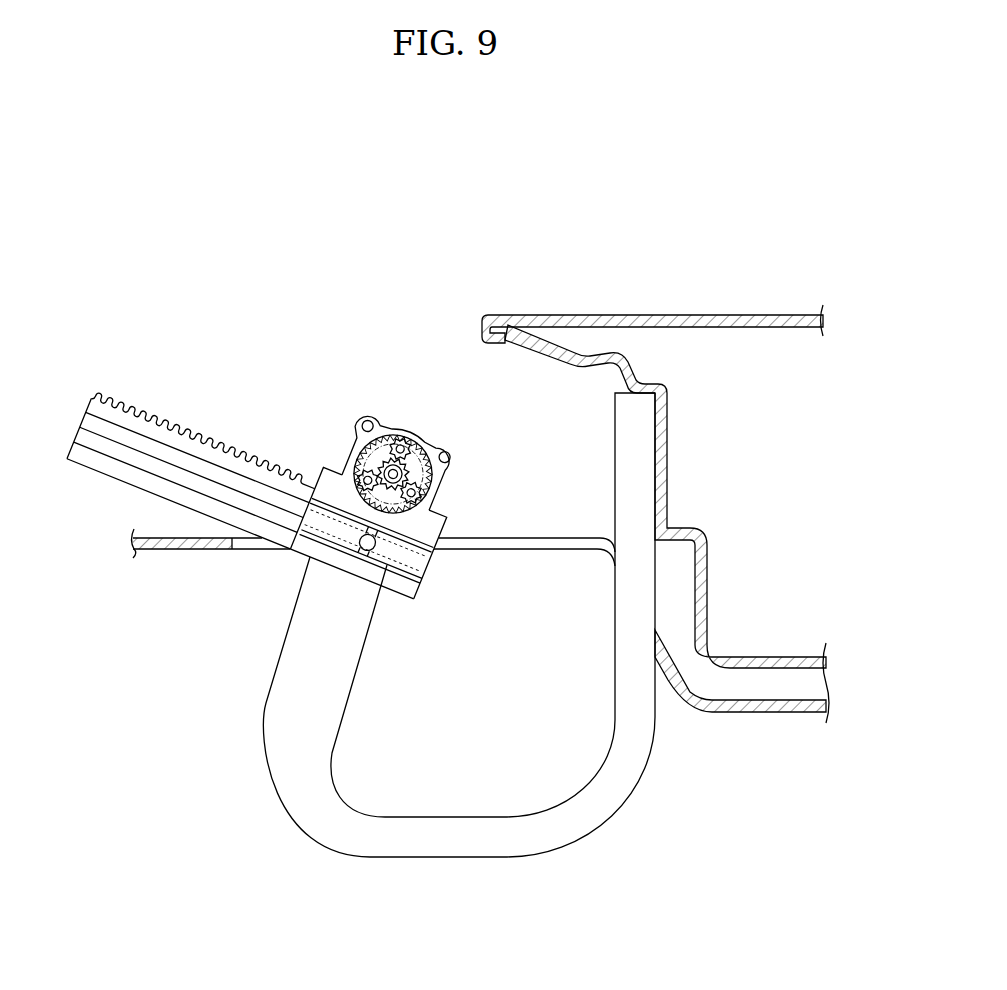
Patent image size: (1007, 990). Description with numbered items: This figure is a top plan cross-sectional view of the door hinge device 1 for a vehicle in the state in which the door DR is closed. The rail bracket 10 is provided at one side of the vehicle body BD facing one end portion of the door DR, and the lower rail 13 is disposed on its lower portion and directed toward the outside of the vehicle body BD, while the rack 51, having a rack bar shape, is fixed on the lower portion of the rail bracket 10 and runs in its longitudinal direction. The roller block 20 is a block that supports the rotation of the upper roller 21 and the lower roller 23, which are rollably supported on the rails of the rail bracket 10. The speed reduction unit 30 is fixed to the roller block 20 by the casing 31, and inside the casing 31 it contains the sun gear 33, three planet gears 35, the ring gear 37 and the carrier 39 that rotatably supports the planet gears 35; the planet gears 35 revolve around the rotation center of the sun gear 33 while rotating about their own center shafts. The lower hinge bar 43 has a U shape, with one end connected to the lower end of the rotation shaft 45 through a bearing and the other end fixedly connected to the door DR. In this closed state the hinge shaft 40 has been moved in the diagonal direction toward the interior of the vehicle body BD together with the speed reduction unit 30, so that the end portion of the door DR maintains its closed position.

The door hinge device 1 is at (206, 707).
The rail bracket 10 is at (98, 465).
The lower rail 13 is at (113, 437).
The rack 51 is at (199, 426).
The roller block 20 is at (448, 526).
The upper roller 21 is at (320, 524).
The lower roller 23 is at (404, 562).
The speed reduction unit 30 is at (407, 435).
The casing 31 is at (455, 466).
The sun gear 33 is at (362, 462).
The planet gears 35 is at (390, 445).
The ring gear 37 is at (406, 448).
The carrier 39 is at (410, 450).
The hinge shaft 40 is at (452, 459).
The rotation shaft 45 is at (378, 468).
The lower hinge bar 43 is at (467, 840).
The vehicle body BD is at (163, 550).
The door DR is at (701, 316).